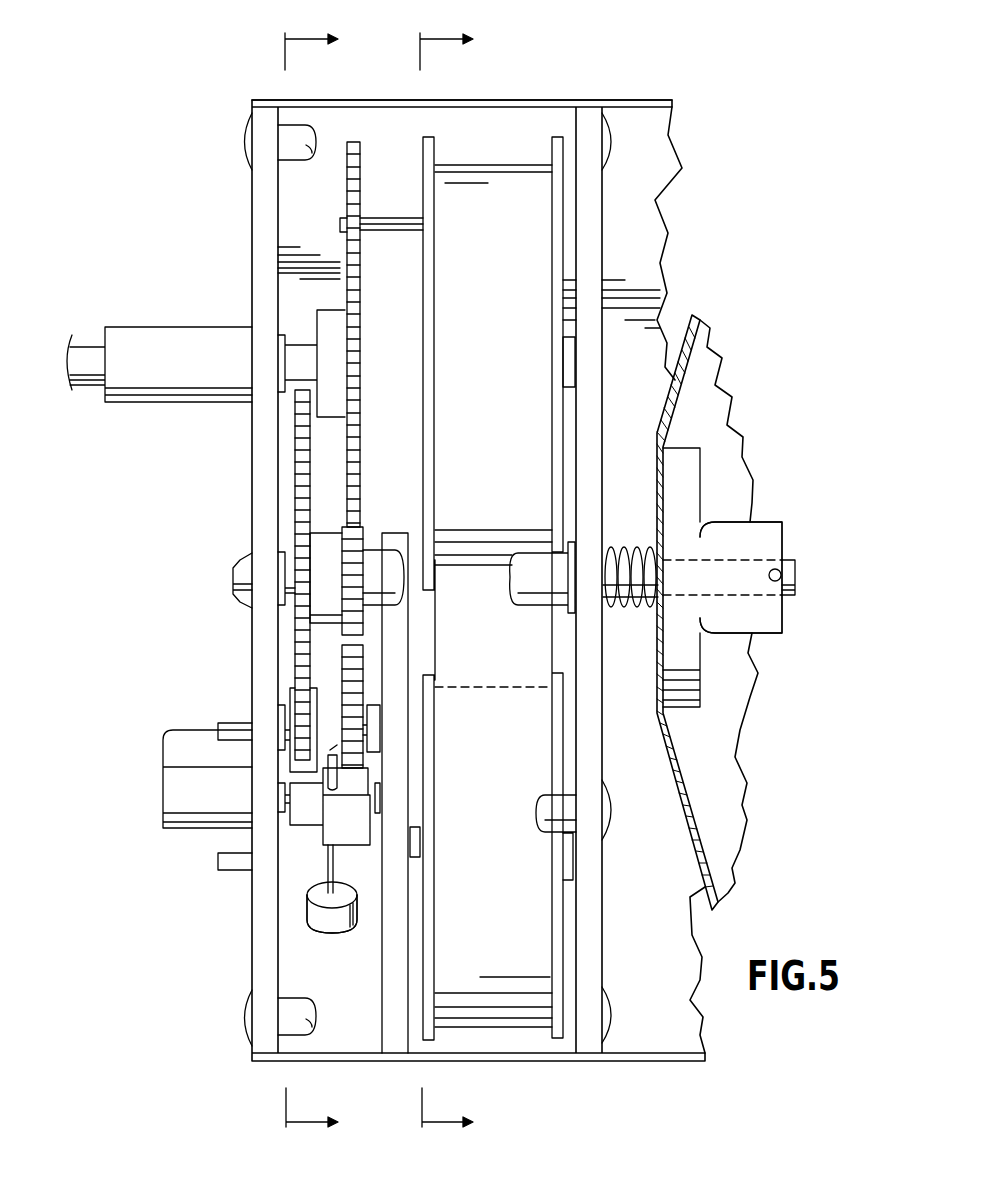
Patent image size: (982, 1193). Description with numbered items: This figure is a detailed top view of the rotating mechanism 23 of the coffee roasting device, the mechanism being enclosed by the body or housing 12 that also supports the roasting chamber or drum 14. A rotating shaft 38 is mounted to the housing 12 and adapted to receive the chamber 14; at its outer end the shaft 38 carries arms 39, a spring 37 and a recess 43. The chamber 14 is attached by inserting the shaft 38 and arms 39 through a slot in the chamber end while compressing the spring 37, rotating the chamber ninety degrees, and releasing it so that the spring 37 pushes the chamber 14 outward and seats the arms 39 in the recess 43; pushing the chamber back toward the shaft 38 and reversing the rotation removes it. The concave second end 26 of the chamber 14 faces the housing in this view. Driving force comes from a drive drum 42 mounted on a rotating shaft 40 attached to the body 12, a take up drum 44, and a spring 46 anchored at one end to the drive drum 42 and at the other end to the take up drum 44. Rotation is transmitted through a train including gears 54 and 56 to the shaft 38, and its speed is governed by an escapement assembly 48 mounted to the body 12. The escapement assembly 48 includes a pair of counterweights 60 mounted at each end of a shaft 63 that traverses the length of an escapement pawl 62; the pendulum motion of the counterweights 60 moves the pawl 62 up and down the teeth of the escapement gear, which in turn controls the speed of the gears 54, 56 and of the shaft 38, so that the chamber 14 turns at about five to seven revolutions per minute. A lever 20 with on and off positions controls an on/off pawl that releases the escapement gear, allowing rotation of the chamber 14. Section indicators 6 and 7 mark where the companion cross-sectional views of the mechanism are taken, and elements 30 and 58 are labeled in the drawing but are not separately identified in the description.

The section line 6- 6 is at (308, 581).
The section line 7- 7 is at (443, 581).
The body or housing 12 is at (265, 1065).
The roasting chamber or drum 14 is at (762, 520).
The lever 20 is at (193, 828).
The rotating mechanism 23 is at (546, 86).
The second end 26 is at (672, 338).
The hub 30 is at (765, 635).
The spring 37 is at (632, 608).
The rotating shaft 38 is at (640, 547).
The arms 39 is at (797, 576).
The rotating shaft 40 is at (88, 347).
The drive drum 42 is at (423, 155).
The recess 43 is at (772, 582).
The take up drum 44 is at (557, 1040).
The spring 46 is at (510, 172).
The escapement assembly 48 is at (357, 937).
The gear 54 is at (295, 645).
The gear 56 is at (365, 535).
The gear 58 is at (362, 290).
The counterweights 60 is at (320, 935).
The escapement pawl 62 is at (360, 825).
The shaft 63 is at (308, 864).